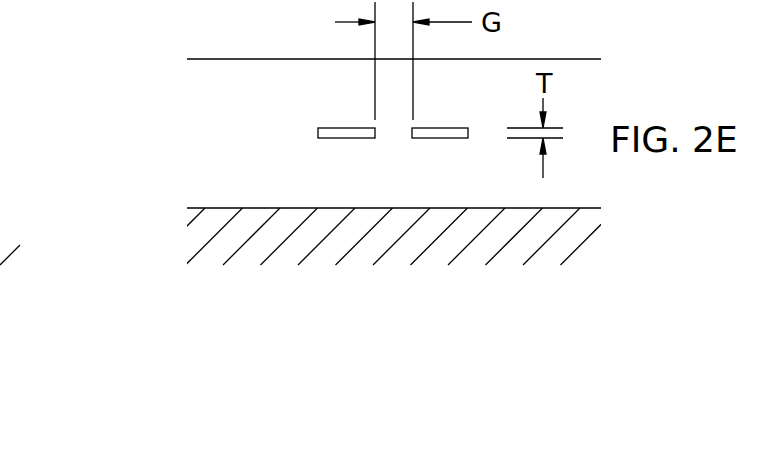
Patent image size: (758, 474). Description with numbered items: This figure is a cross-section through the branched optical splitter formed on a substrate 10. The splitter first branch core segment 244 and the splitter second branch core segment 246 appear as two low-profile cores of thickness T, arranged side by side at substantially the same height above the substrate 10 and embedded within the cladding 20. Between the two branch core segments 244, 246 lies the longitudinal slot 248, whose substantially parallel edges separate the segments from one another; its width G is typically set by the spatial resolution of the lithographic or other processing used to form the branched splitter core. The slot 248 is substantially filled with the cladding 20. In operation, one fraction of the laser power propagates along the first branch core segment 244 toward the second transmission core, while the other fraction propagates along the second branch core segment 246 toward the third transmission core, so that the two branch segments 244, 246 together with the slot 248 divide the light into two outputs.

The substrate 10 is at (274, 252).
The cladding 20 is at (259, 169).
The splitter first branch core segment 244 is at (448, 138).
The splitter second branch core segment 246 is at (340, 138).
The longitudinal slot 248 is at (398, 138).